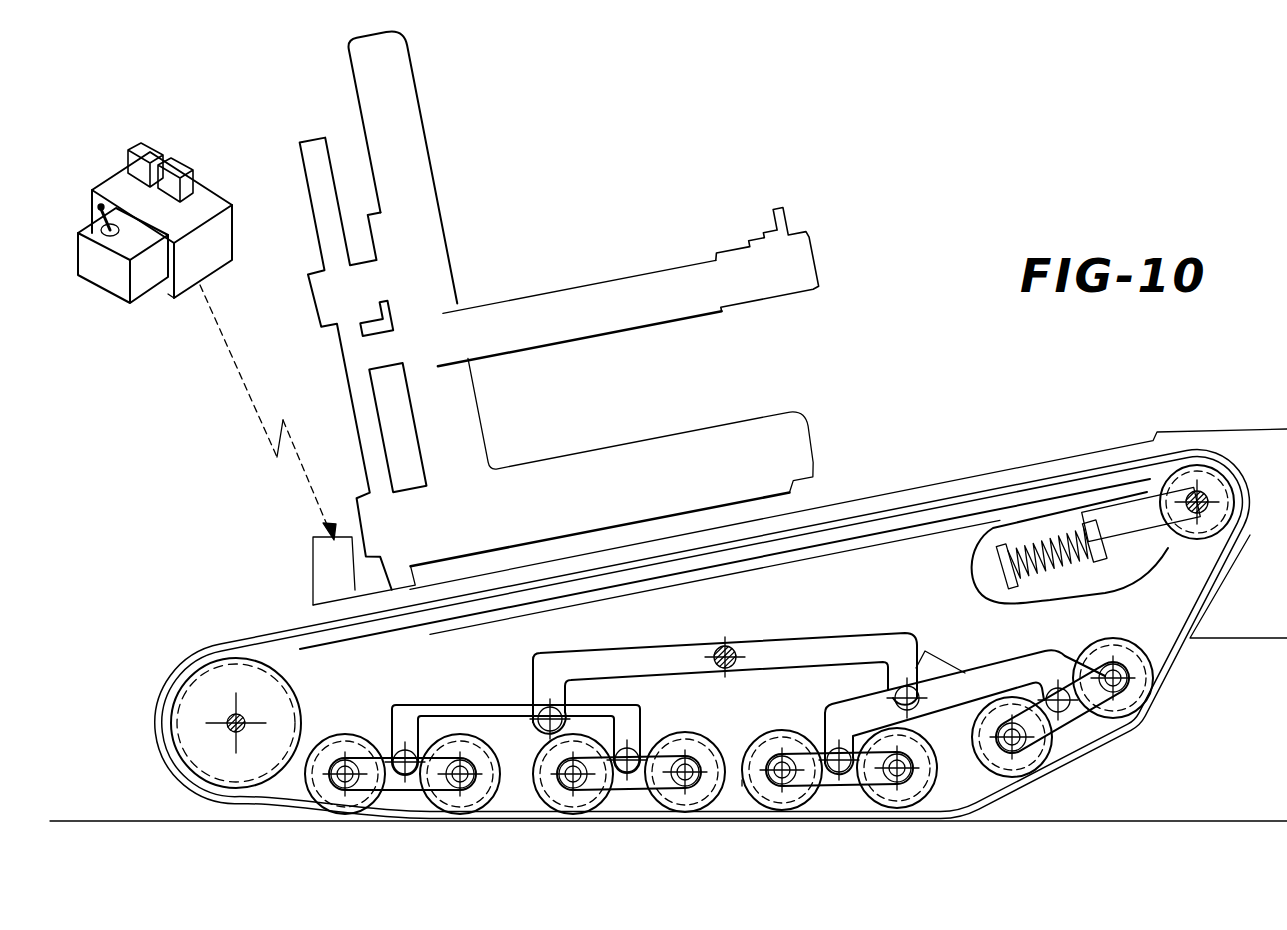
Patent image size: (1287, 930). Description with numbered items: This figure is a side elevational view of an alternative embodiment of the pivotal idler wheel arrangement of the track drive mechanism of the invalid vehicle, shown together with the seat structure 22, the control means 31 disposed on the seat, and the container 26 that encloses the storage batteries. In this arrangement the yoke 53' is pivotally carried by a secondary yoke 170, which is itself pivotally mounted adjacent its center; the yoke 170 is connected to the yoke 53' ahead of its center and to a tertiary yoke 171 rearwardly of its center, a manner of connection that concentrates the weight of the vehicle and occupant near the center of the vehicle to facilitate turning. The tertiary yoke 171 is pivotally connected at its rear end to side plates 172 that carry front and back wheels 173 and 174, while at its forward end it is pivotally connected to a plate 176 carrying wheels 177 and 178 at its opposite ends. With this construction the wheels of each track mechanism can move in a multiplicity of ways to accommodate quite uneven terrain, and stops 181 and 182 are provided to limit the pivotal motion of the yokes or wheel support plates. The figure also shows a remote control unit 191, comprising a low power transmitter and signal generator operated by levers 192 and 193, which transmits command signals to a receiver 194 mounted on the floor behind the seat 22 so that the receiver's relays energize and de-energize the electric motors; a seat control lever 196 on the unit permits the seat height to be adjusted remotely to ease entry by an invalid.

The seat structure 22 is at (468, 238).
The control means 31 is at (828, 270).
The container 26 is at (1245, 433).
The yoke 53' is at (543, 733).
The secondary yoke 170 is at (804, 642).
The tertiary yoke 171 is at (1002, 644).
The side plates 172 is at (841, 792).
The front wheel 173 is at (905, 806).
The back wheel 174 is at (759, 802).
The plate 176 is at (1078, 732).
The wheel 177 is at (1152, 707).
The wheel 178 is at (998, 775).
The stop 181 is at (948, 628).
The stop 182 is at (1078, 658).
The remote control unit 191 is at (226, 238).
The lever 192 is at (152, 149).
The lever 193 is at (185, 172).
The receiver 194 is at (318, 573).
The seat control lever 196 is at (100, 208).